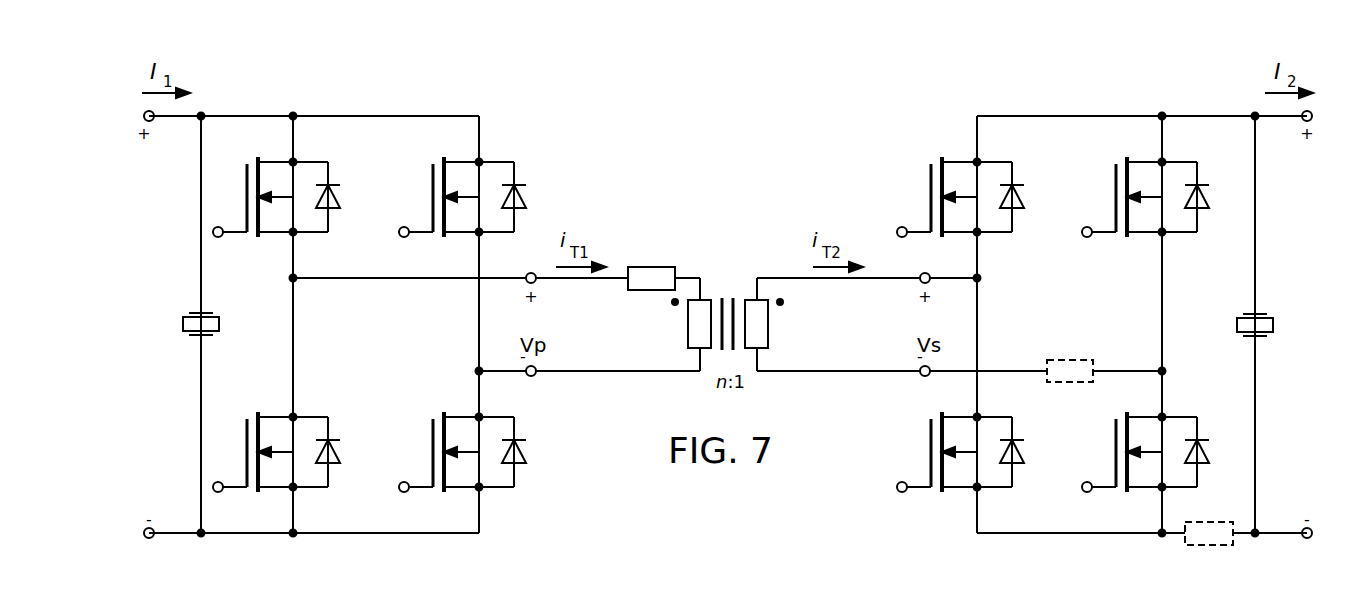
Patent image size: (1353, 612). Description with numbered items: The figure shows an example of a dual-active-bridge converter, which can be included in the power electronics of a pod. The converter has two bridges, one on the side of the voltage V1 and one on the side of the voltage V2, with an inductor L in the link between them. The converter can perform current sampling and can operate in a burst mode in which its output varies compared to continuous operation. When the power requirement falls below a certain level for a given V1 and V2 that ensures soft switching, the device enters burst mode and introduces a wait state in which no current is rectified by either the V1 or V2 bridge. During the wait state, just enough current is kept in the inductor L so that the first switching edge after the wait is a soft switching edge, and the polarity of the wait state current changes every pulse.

The inductor L is at (651, 264).
The V1 bridge voltage V1 is at (175, 328).
The V2 bridge voltage V2 is at (1279, 330).